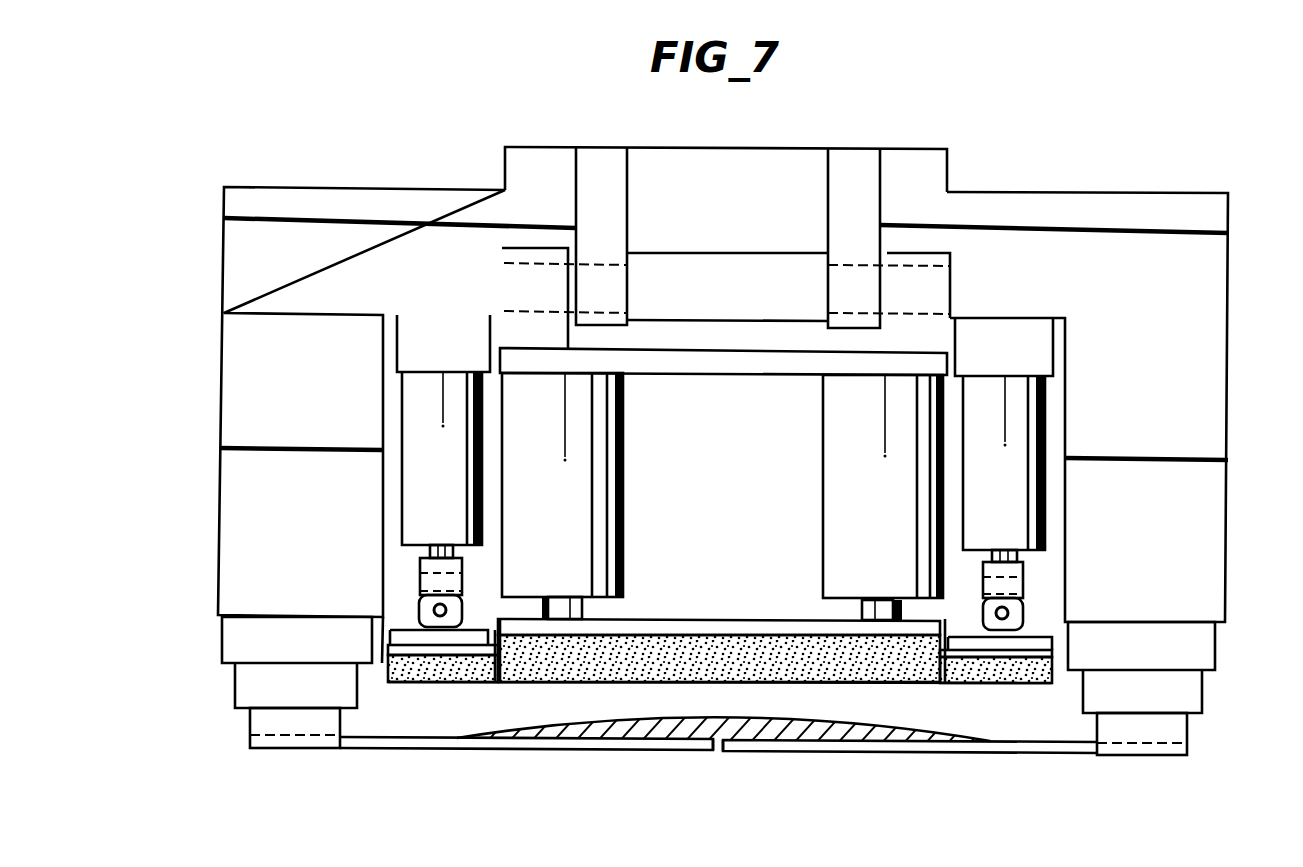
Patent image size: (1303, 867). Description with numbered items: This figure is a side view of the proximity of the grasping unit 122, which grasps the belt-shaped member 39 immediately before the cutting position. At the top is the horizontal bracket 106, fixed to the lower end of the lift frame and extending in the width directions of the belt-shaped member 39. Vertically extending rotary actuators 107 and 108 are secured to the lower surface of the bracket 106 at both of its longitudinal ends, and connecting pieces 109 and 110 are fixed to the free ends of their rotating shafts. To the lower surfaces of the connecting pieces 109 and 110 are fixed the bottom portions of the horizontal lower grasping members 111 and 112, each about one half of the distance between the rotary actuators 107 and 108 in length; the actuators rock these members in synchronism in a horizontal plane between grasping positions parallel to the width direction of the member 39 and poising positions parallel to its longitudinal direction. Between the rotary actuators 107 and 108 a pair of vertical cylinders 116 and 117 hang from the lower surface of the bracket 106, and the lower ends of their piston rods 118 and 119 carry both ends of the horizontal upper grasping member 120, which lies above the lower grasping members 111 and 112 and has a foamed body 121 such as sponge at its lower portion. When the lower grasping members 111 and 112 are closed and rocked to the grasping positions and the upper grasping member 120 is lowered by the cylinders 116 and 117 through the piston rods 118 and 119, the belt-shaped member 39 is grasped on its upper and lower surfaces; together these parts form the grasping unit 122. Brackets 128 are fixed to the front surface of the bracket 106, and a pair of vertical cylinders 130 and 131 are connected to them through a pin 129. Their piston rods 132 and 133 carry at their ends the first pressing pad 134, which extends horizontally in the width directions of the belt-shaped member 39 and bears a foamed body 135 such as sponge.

The belt-shaped member 39 is at (660, 722).
The horizontal bracket 106 is at (752, 158).
The rotary actuator 107 is at (238, 432).
The rotary actuator 108 is at (1218, 390).
The connecting piece 109 is at (250, 722).
The connecting piece 110 is at (1178, 727).
The lower grasping member 111 is at (423, 750).
The lower grasping member 112 is at (897, 753).
The vertical cylinder 116 is at (484, 428).
The vertical cylinder 117 is at (1042, 432).
The left piston rod 118 is at (433, 545).
The right piston rod 119 is at (998, 550).
The upper grasping member 120 is at (388, 620).
The foamed body 121 is at (430, 683).
The grasping unit 122 is at (600, 752).
The brackets 128 is at (597, 165).
The pin 129 is at (748, 258).
The vertical cylinder 130 is at (612, 428).
The vertical cylinder 131 is at (838, 435).
The piston rod 132 is at (548, 597).
The piston rod 133 is at (875, 600).
The first pressing pad 134 is at (665, 618).
The foamed body 135 is at (770, 640).